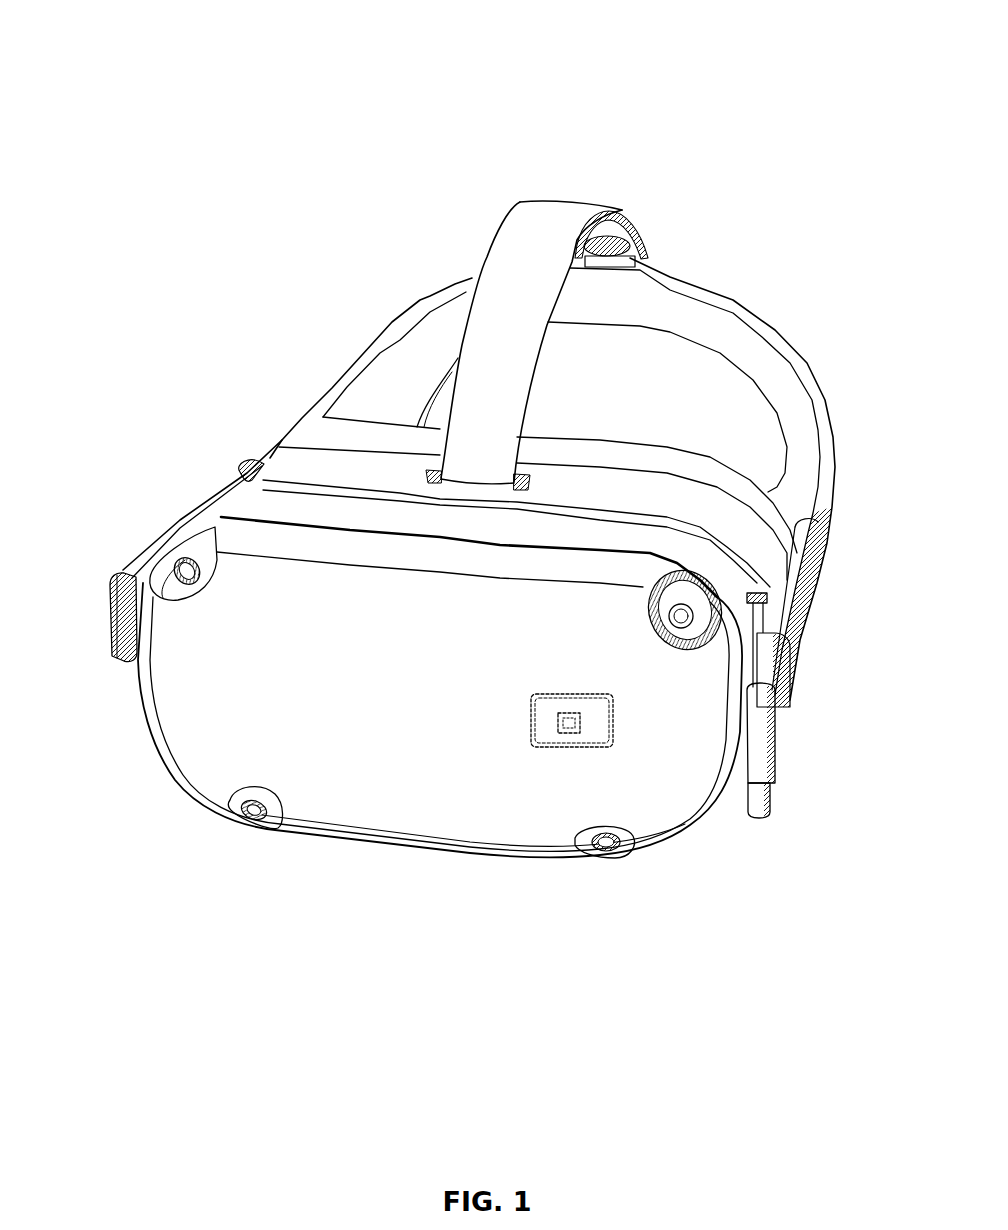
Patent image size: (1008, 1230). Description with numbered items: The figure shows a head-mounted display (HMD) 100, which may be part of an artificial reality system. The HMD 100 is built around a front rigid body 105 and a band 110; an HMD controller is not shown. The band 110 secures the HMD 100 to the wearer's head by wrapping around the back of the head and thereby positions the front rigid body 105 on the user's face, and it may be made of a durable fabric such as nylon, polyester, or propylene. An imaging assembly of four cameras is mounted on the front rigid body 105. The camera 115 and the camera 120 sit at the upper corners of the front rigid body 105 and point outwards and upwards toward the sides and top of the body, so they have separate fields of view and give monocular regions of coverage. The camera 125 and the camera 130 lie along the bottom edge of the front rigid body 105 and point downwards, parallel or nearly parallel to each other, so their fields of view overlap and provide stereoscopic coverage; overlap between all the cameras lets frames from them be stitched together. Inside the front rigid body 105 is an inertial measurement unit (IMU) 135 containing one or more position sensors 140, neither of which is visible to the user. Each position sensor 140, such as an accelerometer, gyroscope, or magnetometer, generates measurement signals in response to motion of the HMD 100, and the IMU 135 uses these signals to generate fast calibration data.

The head-mounted display 100 is at (48, 31).
The front rigid body 105 is at (200, 698).
The band 110 is at (772, 347).
The camera 115 is at (179, 570).
The camera 120 is at (683, 607).
The camera 125 is at (610, 846).
The camera 130 is at (253, 810).
The inertial measurement unit 135 is at (600, 717).
The position sensor 140 is at (570, 727).